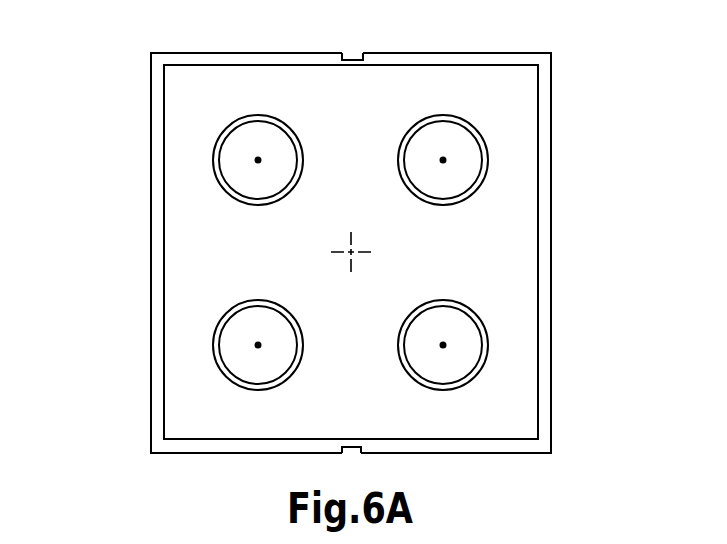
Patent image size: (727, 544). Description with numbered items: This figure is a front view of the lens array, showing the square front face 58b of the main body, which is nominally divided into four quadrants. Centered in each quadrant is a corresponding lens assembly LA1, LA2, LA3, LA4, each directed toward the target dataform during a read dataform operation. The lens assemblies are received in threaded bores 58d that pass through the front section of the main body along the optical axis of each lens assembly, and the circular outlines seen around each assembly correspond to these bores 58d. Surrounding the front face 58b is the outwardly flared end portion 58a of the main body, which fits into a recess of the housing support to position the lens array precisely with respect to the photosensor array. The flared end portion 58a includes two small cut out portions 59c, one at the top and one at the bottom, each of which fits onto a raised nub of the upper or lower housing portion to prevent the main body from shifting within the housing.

The outwardly flared end portion 58a is at (552, 106).
The front face 58b is at (463, 80).
The threaded bore 58d is at (220, 141).
The cut out portion 59c is at (341, 44).
The lens assembly LA1 is at (198, 183).
The lens assembly LA2 is at (203, 373).
The lens assembly LA3 is at (497, 190).
The lens assembly LA4 is at (504, 364).